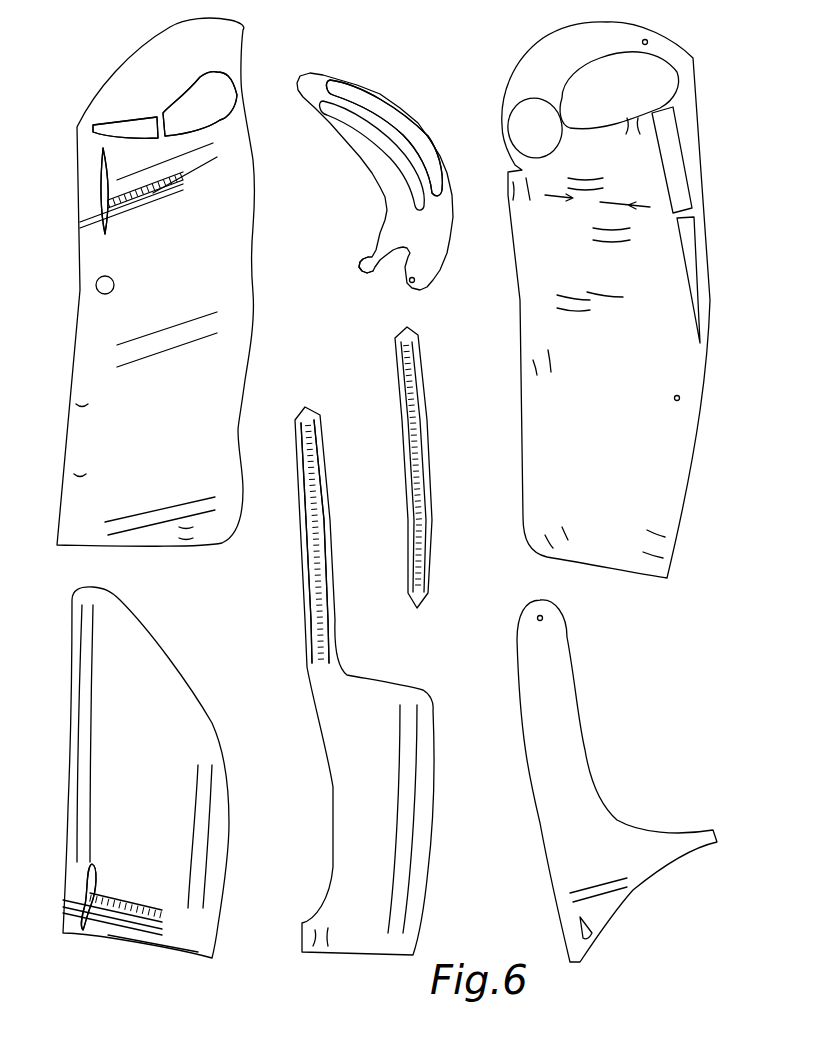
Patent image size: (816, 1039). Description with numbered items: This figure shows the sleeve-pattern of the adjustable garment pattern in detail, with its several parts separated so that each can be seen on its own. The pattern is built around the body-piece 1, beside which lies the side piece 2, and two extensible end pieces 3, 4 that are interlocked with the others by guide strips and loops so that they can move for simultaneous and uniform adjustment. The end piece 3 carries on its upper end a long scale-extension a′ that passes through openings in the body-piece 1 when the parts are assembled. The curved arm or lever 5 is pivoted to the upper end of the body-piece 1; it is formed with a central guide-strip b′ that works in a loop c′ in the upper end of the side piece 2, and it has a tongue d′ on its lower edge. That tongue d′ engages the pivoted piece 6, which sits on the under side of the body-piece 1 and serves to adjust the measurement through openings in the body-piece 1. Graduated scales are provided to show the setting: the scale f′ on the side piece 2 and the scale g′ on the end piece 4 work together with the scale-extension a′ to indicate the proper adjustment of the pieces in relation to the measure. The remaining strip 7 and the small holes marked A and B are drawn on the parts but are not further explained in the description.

The body-piece 1 is at (606, 300).
The side piece 2 is at (156, 282).
The extensible end piece 3 is at (364, 681).
The extensible end piece 4 is at (146, 772).
The curved arm or lever 5 is at (375, 181).
The pivoted piece 6 is at (617, 781).
The template No. 7 (graduated scale strip) 7 is at (428, 467).
The scale-extension a′ is at (328, 541).
The central guide-strip b′ is at (377, 128).
The loop c′ is at (158, 62).
The tongue d′ is at (362, 272).
The scale f′ is at (116, 896).
The scale g′ is at (147, 191).
The register hole A is at (610, 514).
The register hole B is at (529, 157).